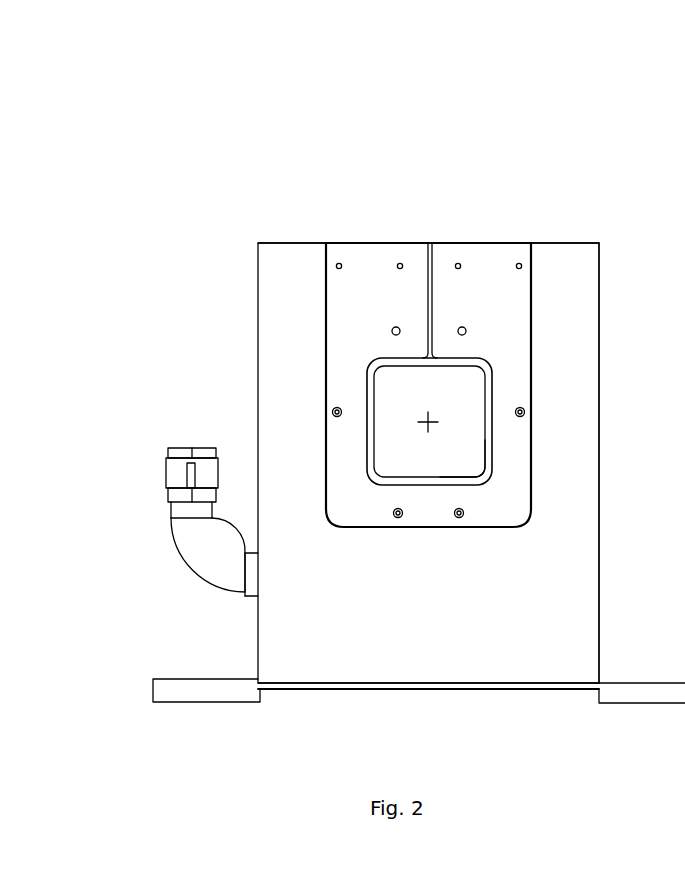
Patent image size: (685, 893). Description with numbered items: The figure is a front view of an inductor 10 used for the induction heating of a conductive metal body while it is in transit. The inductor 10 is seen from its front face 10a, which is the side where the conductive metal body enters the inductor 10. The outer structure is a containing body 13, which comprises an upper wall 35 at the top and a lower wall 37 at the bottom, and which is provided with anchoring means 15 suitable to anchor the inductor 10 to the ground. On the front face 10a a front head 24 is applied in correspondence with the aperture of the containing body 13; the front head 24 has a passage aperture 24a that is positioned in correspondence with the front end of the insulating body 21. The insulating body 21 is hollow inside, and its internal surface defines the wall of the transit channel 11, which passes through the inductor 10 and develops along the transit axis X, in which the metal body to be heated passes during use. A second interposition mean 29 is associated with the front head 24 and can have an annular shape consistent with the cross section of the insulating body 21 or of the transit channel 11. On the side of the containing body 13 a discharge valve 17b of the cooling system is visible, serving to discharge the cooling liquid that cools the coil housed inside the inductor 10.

The inductor 10 is at (290, 150).
The front face 10a is at (386, 664).
The transit channel 11 is at (391, 392).
The containing body 13 is at (571, 391).
The anchoring means 15 is at (205, 694).
The discharge valve 17b is at (208, 468).
The insulating body 21 is at (470, 475).
The front head 24 is at (481, 261).
The passage aperture 24a is at (480, 422).
The second interposition mean 29 is at (428, 344).
The upper wall 35 is at (318, 242).
The lower wall 37 is at (513, 691).
The transit axis X is at (430, 421).